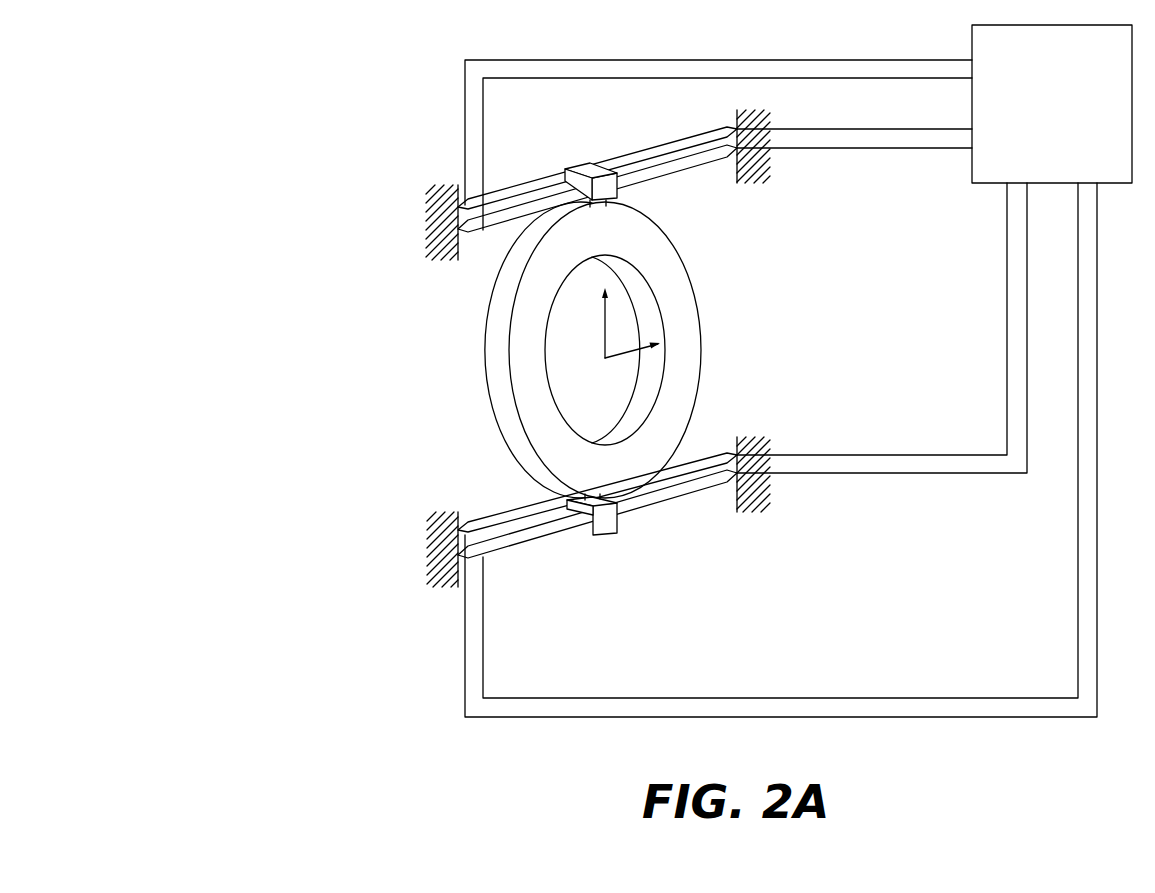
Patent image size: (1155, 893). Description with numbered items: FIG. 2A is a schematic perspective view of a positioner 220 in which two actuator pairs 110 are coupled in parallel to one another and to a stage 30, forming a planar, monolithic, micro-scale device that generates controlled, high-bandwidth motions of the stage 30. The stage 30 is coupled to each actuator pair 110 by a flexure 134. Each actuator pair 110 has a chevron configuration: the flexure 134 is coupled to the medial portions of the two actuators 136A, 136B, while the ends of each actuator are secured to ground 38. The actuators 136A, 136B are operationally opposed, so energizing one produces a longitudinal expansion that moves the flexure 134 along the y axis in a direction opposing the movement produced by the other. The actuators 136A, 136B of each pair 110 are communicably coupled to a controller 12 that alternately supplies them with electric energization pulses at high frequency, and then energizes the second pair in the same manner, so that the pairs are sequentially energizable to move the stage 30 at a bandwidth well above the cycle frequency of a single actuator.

The positioner 220 is at (238, 90).
The controller 12 is at (1069, 118).
The stage 30 is at (695, 317).
The ground 38 is at (438, 220).
The actuator pair 110 is at (558, 374).
The flexure 134 is at (576, 352).
The actuator 136A is at (637, 160).
The actuator 136B is at (687, 168).